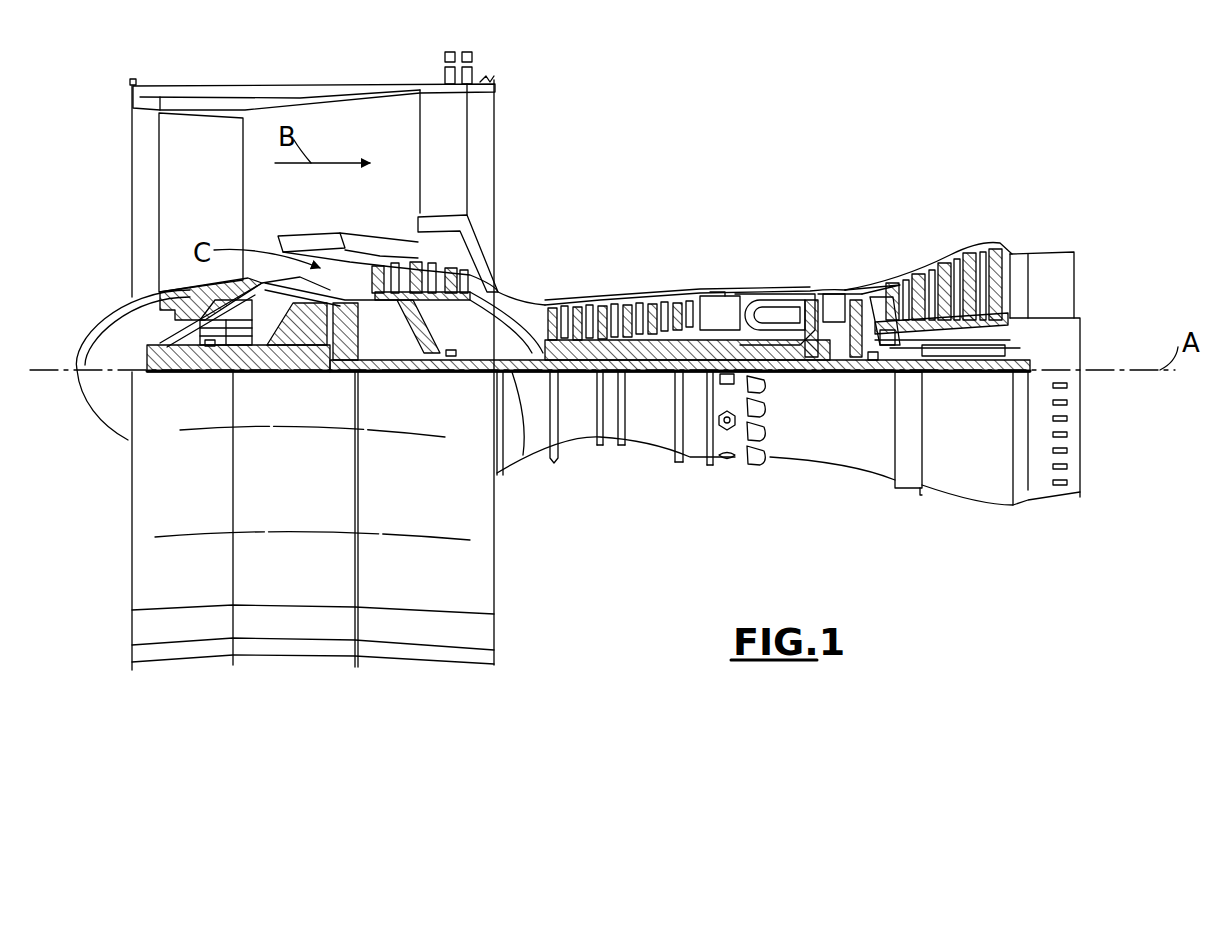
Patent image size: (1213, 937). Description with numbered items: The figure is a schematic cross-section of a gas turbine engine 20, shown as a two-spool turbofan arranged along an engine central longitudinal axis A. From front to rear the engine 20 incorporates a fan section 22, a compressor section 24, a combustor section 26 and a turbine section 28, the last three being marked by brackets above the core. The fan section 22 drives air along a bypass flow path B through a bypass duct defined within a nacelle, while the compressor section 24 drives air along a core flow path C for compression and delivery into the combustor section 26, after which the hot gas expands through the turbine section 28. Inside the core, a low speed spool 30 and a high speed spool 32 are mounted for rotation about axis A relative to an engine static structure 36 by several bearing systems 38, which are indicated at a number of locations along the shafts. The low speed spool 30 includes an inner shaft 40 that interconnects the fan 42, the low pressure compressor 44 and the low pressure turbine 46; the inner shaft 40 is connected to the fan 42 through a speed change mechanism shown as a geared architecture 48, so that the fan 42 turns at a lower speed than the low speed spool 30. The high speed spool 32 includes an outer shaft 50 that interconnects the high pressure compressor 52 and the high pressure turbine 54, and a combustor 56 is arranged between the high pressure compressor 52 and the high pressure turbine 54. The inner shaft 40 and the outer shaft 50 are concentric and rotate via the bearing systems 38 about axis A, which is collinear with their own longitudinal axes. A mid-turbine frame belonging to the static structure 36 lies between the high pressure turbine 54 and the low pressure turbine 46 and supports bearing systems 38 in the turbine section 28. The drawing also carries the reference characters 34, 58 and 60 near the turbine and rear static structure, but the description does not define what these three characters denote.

The gas turbine engine 20 is at (776, 133).
The fan section 22 is at (340, 58).
The compressor section 24 is at (350, 207).
The combustor section 26 is at (804, 207).
The turbine section 28 is at (1027, 207).
The low speed spool 30 is at (652, 380).
The high speed spool 32 is at (698, 322).
The engine static structure 34 is at (972, 372).
The engine static structure 36 is at (691, 466).
The bearing systems 38 is at (211, 372).
The inner shaft 40 is at (523, 455).
The fan 42 is at (216, 218).
The low pressure compressor 44 is at (428, 272).
The low pressure turbine 46 is at (958, 252).
The geared architecture 48 is at (320, 353).
The outer shaft 50 is at (780, 352).
The high pressure compressor 52 is at (623, 300).
The high pressure turbine 54 is at (831, 292).
The combustor 56 is at (768, 310).
The mid-turbine frame 58 is at (878, 281).
The airfoils 60 is at (912, 375).